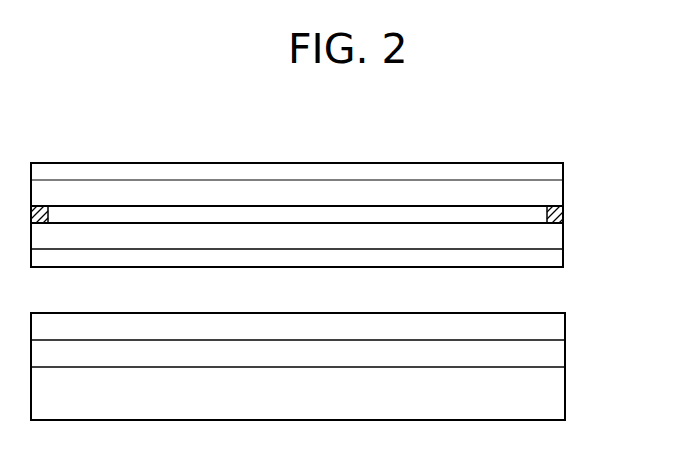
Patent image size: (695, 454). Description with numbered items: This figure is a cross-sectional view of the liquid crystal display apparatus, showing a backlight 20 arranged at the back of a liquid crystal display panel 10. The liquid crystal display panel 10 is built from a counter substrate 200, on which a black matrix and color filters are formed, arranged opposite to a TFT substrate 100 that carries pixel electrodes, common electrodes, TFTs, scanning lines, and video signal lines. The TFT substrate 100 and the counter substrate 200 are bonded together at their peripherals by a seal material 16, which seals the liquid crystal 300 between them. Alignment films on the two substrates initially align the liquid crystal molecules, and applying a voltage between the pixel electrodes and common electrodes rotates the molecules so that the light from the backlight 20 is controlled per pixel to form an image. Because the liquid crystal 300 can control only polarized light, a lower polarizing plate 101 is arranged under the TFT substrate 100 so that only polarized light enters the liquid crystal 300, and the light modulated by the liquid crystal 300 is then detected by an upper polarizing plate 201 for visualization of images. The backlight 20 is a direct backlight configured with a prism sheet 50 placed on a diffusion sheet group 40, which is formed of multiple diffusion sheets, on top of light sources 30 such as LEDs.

The liquid crystal display panel 10 is at (359, 199).
The upper polarizing plate 201 is at (563, 170).
The counter substrate 200 is at (563, 192).
The liquid crystal 300 is at (458, 214).
The seal material 16 is at (563, 215).
The TFT substrate 100 is at (563, 237).
The lower polarizing plate 101 is at (335, 258).
The backlight 20 is at (353, 365).
The prism sheet 50 is at (565, 327).
The diffusion sheet group 40 is at (565, 355).
The light sources 30 is at (328, 393).